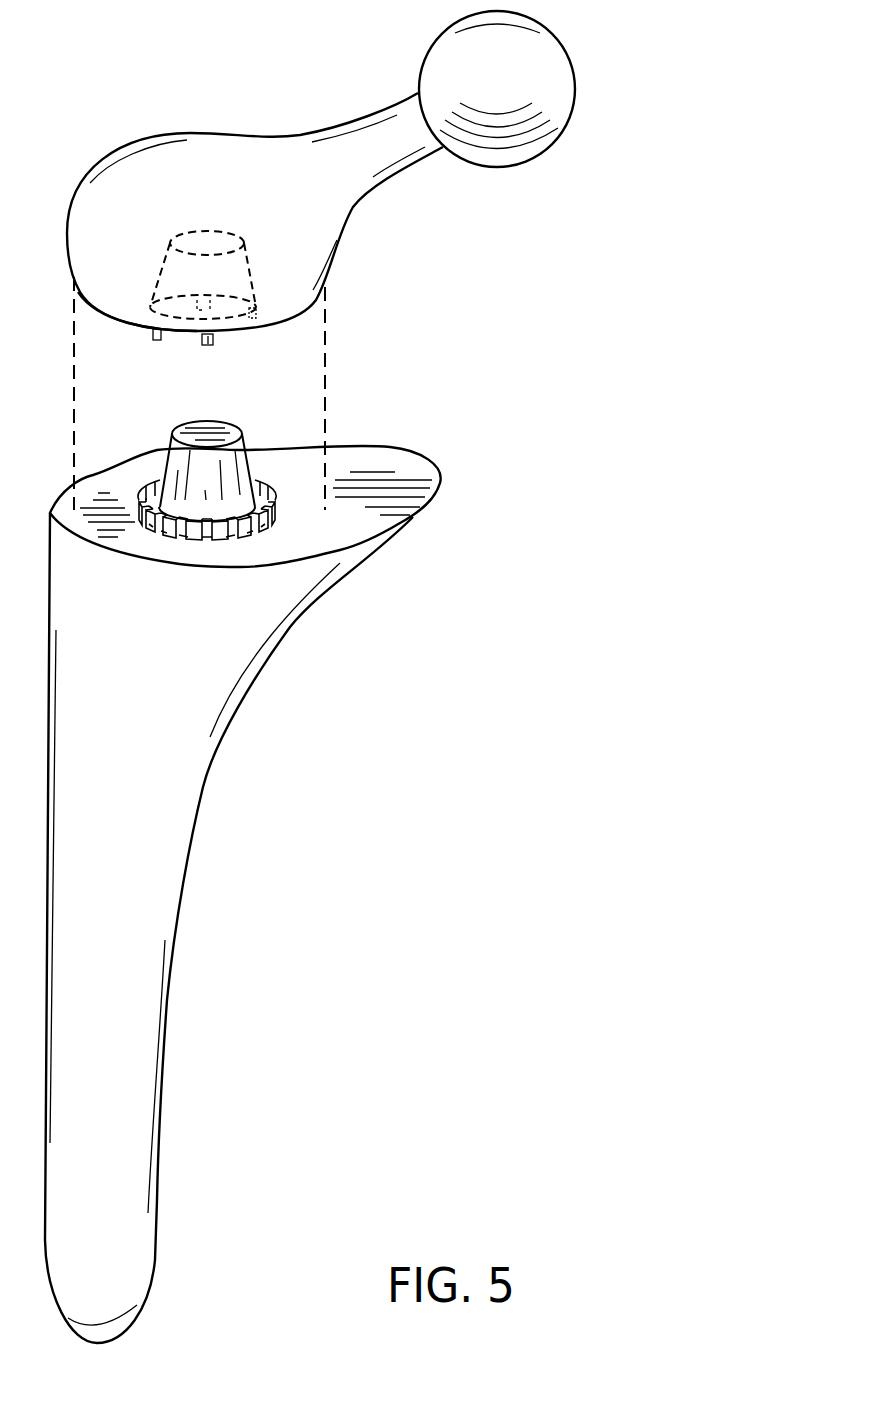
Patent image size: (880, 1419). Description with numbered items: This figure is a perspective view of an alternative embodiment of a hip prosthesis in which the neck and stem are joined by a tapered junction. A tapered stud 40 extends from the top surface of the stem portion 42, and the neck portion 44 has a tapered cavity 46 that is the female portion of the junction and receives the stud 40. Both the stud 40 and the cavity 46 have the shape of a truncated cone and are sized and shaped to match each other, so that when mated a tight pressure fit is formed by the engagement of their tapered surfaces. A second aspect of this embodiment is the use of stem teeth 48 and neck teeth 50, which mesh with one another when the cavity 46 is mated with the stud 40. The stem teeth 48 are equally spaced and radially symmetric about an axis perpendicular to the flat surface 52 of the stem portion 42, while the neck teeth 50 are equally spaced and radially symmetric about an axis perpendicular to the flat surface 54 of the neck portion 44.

The tapered stud 40 is at (247, 453).
The stem portion 42 is at (178, 882).
The neck portion 44 is at (348, 214).
The tapered cavity 46 is at (168, 274).
The stem teeth 48 is at (243, 534).
The neck teeth 50 is at (250, 316).
The surface 52 is at (397, 457).
The surface 54 is at (112, 320).